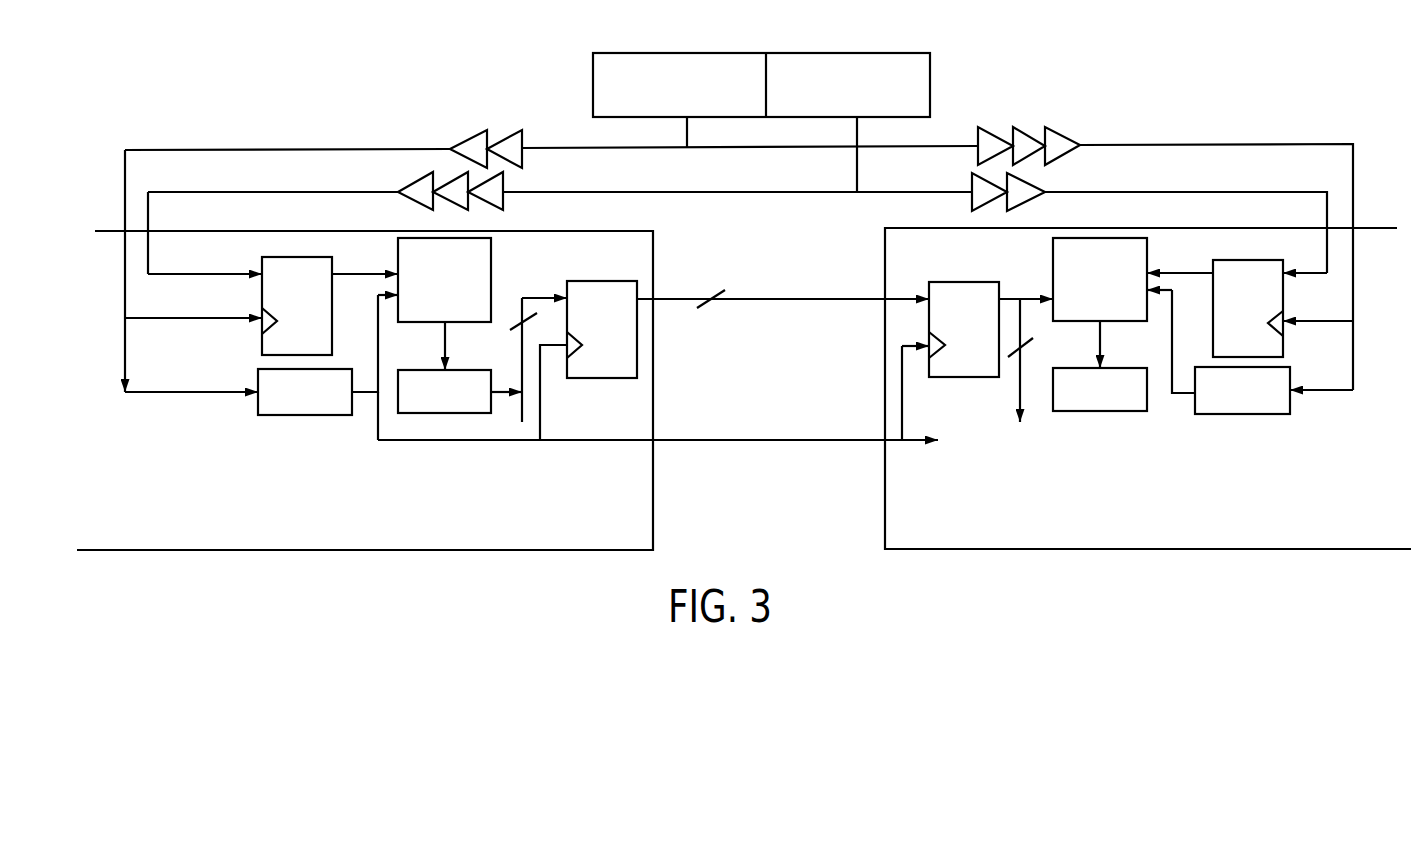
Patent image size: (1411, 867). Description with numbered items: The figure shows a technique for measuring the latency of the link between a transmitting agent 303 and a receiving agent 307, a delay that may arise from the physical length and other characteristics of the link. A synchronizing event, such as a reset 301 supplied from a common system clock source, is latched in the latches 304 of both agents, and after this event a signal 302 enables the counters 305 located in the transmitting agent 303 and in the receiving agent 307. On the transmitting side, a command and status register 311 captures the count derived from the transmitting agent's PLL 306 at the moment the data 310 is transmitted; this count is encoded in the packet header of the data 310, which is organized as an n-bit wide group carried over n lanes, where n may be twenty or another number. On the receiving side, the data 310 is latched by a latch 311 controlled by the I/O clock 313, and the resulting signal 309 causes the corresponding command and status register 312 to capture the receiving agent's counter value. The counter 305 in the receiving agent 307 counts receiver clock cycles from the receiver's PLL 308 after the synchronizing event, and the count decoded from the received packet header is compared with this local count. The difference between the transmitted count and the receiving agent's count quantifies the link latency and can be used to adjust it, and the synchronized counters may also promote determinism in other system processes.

The reset 301 is at (825, 94).
The signal 302 is at (772, 257).
The transmitting agent 303 is at (110, 480).
The latch 304 is at (284, 351).
The counter 305 is at (427, 289).
The PLL 306 is at (287, 403).
The receiving agent 307 is at (1367, 466).
The PLL 308 is at (1225, 401).
The signal 309 is at (1026, 343).
The data 310 is at (783, 302).
The command and status register 311 is at (427, 403).
The command and status register 312 is at (590, 376).
The I/O clock 313 is at (658, 408).